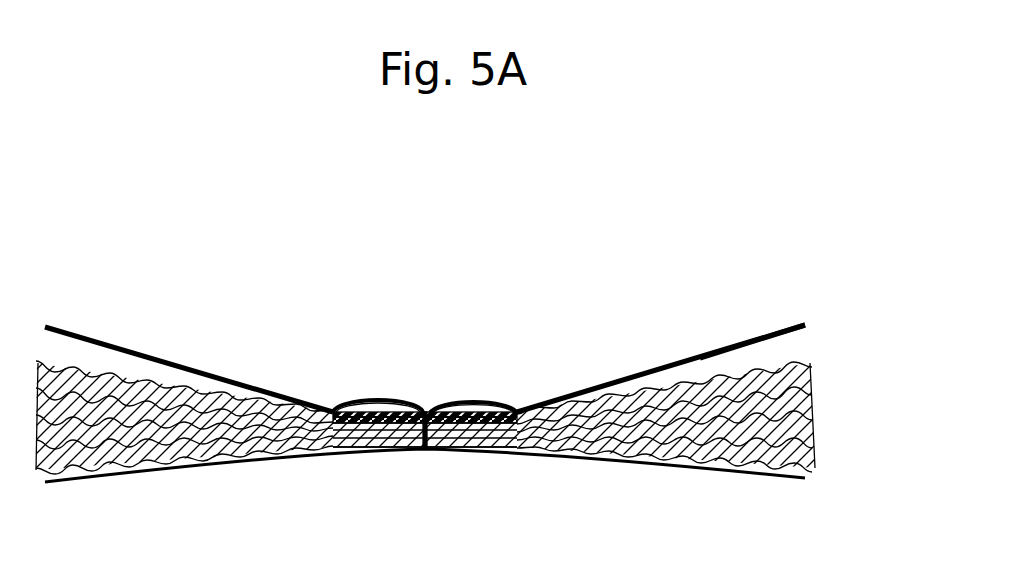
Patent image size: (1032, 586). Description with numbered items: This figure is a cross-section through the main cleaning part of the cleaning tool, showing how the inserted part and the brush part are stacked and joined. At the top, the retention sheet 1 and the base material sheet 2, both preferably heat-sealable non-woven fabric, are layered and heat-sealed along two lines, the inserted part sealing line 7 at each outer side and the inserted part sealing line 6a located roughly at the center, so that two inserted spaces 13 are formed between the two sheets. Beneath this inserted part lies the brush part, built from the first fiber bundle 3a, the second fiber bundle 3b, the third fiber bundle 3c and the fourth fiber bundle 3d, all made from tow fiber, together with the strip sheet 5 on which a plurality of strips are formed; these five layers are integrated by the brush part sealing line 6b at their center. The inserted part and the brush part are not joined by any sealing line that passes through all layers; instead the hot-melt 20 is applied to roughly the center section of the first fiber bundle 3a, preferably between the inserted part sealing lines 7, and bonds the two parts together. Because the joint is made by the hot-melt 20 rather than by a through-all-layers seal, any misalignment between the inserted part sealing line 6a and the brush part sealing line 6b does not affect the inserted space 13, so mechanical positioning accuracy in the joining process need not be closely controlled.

The retention sheet 1 is at (380, 412).
The base material sheet 2 is at (380, 405).
The first fiber bundle 3a is at (810, 367).
The second fiber bundle 3b is at (813, 393).
The third fiber bundle 3c is at (803, 423).
The fourth fiber bundle 3d is at (805, 453).
The strip sheet 5 is at (787, 478).
The inserted part sealing line 6a is at (432, 417).
The brush part sealing line 6b is at (427, 443).
The inserted part sealing line 7 is at (337, 413).
The inserted space 13 is at (337, 415).
The hot-melt 20 is at (363, 447).